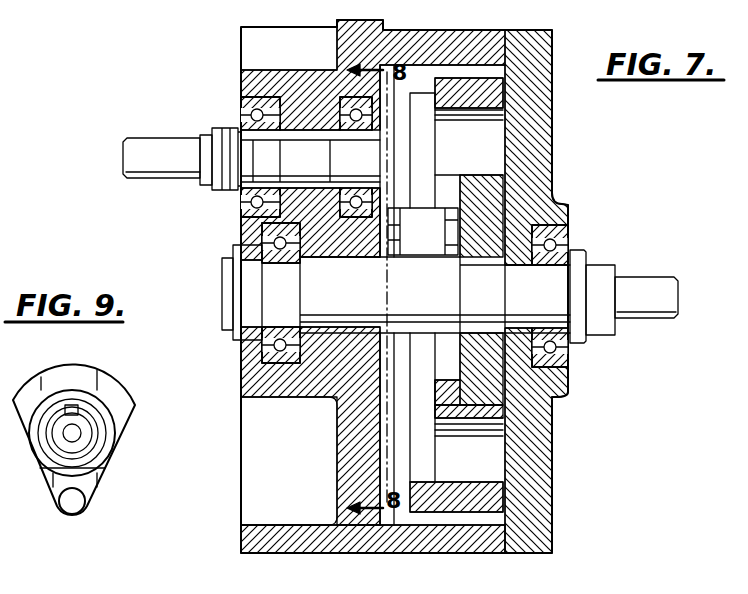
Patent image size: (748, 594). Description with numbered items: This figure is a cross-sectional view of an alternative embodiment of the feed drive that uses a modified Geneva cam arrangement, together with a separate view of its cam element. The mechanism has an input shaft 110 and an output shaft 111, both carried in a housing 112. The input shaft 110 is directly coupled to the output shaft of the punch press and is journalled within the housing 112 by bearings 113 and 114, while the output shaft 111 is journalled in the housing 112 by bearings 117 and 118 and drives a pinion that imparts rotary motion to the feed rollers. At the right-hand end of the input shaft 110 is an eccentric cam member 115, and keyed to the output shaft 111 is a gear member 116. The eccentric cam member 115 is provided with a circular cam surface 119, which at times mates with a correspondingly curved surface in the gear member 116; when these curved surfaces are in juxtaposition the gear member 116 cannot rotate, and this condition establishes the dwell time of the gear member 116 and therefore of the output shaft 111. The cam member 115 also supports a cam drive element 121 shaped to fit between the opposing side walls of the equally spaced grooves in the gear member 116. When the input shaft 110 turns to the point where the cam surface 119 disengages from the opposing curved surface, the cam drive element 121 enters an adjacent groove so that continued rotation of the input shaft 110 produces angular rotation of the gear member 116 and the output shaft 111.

In FIG. 7, the input shaft 110 is at (168, 142).
In FIG. 7, the output shaft 111 is at (646, 278).
In FIG. 7, the housing 112 is at (430, 40).
In FIG. 7, the bearing 113 is at (242, 107).
In FIG. 7, the bearing 114 is at (342, 100).
In FIG. 7, the eccentric cam member 115 is at (423, 130).
In FIG. 9, the eccentric cam member 115 is at (119, 433).
In FIG. 7, the gear member 116 is at (478, 528).
In FIG. 7, the bearing 117 is at (566, 232).
In FIG. 7, the bearing 118 is at (262, 350).
In FIG. 9, the circular cam surface 119 is at (97, 390).
In FIG. 7, the cam drive element 121 is at (441, 255).